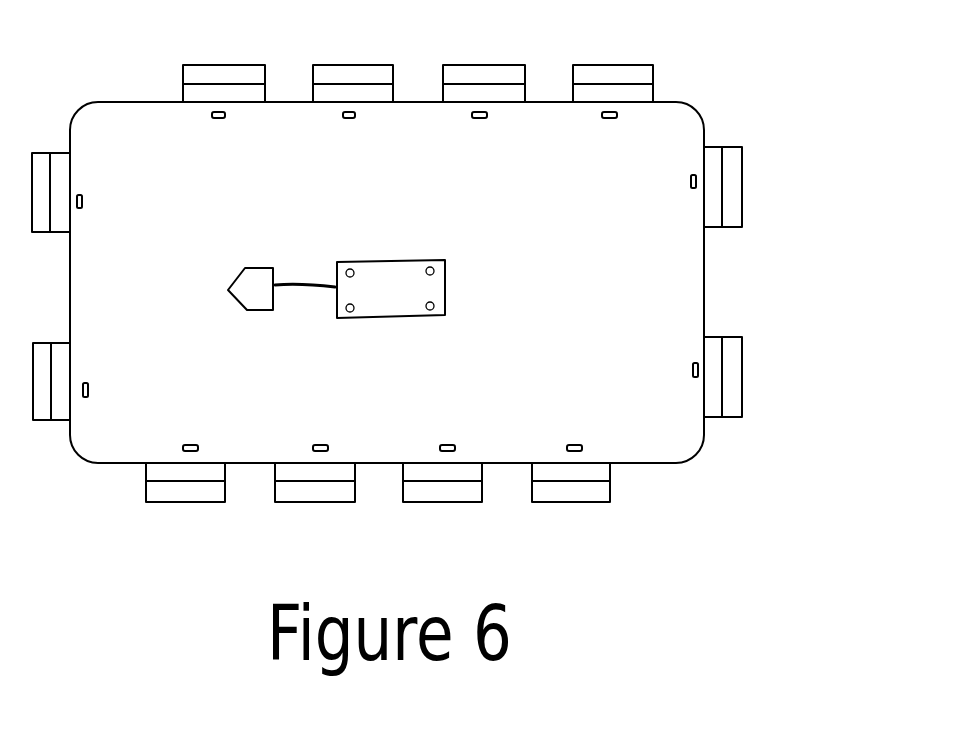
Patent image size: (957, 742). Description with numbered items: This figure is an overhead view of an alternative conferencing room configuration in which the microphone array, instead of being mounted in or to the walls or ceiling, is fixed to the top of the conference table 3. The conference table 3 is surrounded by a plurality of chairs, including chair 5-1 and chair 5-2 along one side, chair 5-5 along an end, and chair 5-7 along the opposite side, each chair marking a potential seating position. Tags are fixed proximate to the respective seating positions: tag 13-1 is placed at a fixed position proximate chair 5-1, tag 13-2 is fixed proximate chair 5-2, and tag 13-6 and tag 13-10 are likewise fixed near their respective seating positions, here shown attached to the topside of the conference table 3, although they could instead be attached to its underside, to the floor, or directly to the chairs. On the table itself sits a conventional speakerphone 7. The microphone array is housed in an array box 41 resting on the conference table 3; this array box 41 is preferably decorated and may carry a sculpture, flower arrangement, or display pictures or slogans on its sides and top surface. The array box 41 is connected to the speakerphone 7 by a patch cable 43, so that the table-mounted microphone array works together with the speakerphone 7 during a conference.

The conference table 3 is at (605, 290).
The chair 5-1 is at (203, 65).
The chair 5-2 is at (358, 65).
The chair 5-5 is at (742, 187).
The chair 5-7 is at (568, 502).
The tag 13-1 is at (216, 118).
The tag 13-2 is at (348, 118).
The tag 13-6 is at (691, 370).
The tag 13-10 is at (190, 447).
The speakerphone 7 is at (252, 296).
The patch cable 43 is at (302, 283).
The array box 41 is at (408, 262).